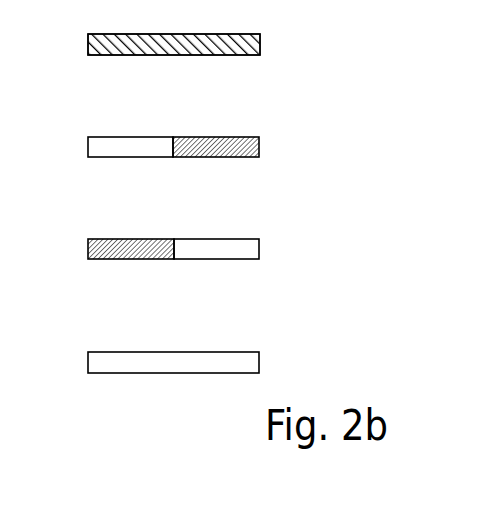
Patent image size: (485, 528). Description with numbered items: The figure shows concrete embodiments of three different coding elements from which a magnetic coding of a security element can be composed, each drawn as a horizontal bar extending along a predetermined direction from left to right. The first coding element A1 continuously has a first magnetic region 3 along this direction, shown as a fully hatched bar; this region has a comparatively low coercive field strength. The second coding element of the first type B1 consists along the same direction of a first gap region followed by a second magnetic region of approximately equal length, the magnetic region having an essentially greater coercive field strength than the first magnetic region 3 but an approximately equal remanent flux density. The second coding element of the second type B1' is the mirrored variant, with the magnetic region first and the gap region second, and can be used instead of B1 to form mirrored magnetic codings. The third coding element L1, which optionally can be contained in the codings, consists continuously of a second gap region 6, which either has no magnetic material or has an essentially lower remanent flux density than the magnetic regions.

The first magnetic region 3 is at (150, 56).
The second gap region 6 is at (159, 374).
The first coding element A1 is at (143, 61).
The second coding element of the first type B1 is at (143, 155).
The second coding element of the second type B1' is at (143, 257).
The third coding element L1 is at (144, 371).